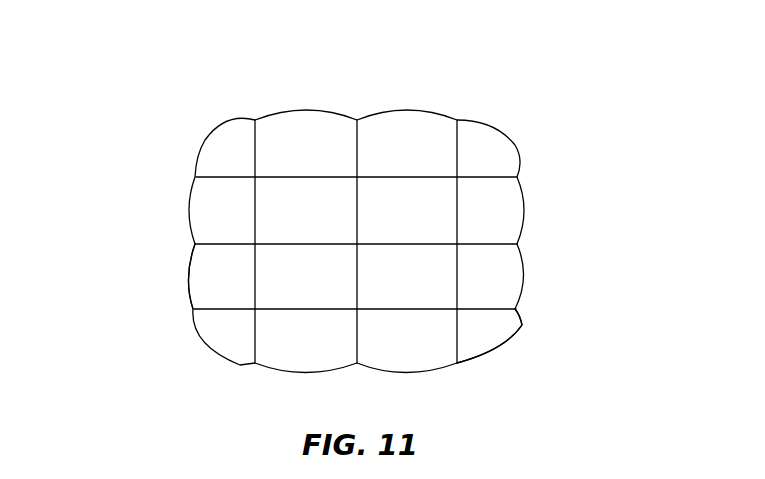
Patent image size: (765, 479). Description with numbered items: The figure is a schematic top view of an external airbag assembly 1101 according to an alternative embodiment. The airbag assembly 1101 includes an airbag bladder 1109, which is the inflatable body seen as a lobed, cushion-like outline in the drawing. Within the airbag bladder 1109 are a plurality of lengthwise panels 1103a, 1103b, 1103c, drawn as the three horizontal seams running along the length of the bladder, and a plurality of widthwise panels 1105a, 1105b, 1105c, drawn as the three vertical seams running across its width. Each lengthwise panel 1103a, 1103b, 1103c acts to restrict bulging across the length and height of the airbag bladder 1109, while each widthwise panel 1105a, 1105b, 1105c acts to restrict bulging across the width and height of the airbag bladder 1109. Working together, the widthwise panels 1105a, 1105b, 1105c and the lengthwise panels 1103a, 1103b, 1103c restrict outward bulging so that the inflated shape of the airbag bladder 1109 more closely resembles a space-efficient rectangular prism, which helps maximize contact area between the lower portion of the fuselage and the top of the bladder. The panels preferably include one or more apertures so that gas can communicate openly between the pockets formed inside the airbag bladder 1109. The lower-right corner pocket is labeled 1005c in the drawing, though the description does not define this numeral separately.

The airbag assembly 1101 is at (178, 113).
The widthwise panel 1105a is at (262, 120).
The widthwise panel 1105b is at (363, 120).
The widthwise panel 1105c is at (465, 120).
The lengthwise panel 1103a is at (502, 177).
The lengthwise panel 1103b is at (495, 244).
The lengthwise panel 1103c is at (497, 308).
The airbag bladder 1109 is at (187, 268).
The corner cell 1005c is at (502, 330).